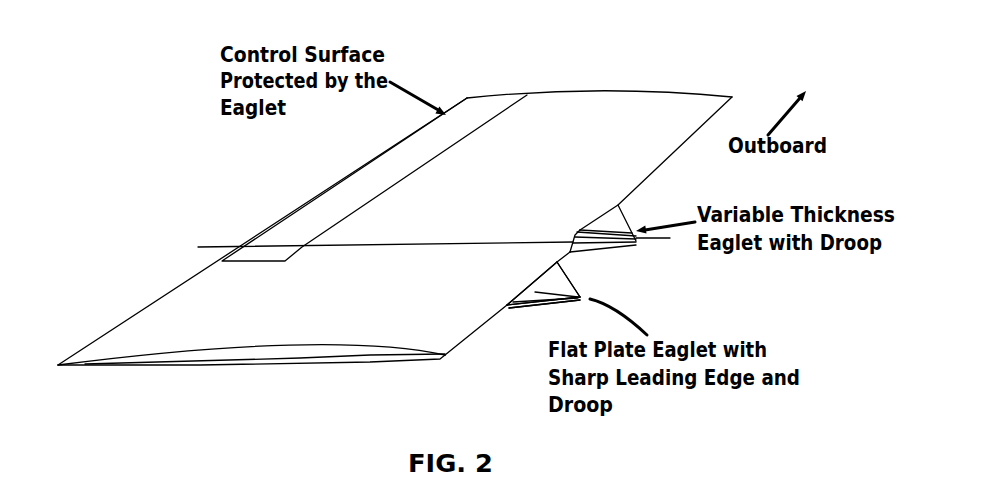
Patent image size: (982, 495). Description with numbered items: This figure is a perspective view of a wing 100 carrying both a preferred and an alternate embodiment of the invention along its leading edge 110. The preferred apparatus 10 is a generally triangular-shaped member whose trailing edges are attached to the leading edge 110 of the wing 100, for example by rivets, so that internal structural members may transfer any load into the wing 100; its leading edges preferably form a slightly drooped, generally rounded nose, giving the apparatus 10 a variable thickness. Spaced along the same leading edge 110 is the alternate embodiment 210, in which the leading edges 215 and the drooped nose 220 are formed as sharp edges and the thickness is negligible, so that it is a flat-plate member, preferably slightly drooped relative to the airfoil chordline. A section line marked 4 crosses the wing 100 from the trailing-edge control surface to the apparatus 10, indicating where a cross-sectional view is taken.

The wing 100 is at (603, 102).
The leading edge of wing 110 is at (695, 125).
The section line 4- 4 is at (198, 247).
The apparatus 10 is at (611, 258).
The alternate embodiment 210 is at (496, 335).
The leading edges 215 is at (536, 309).
The drooped nose 220 is at (590, 298).